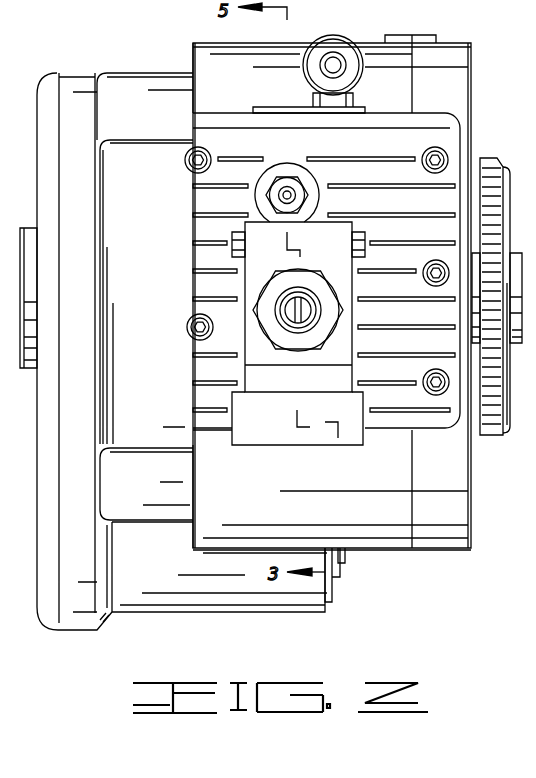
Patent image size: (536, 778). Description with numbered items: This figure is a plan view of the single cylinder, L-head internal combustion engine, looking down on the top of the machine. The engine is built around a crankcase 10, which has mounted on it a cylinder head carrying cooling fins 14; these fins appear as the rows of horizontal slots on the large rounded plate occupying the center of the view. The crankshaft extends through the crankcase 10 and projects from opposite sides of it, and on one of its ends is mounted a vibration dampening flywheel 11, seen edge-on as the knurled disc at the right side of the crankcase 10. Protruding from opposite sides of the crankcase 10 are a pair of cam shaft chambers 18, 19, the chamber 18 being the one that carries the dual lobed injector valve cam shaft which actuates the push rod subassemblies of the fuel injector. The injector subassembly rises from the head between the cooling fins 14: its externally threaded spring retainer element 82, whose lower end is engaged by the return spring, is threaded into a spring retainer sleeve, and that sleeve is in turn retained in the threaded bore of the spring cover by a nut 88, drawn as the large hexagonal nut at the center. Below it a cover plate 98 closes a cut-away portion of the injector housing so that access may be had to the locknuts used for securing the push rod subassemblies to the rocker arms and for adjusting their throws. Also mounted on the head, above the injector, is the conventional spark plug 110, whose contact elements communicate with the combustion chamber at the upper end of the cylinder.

The crankcase 10 is at (458, 83).
The vibration dampening flywheel 11 is at (507, 168).
The cooling fins 14 is at (445, 127).
The cam shaft chamber 18 is at (252, 489).
The cam shaft chamber 19 is at (206, 63).
The spring retainer element 82 is at (308, 300).
The nut 88 is at (278, 348).
The cover plate 98 is at (262, 440).
The spark plug 110 is at (302, 196).